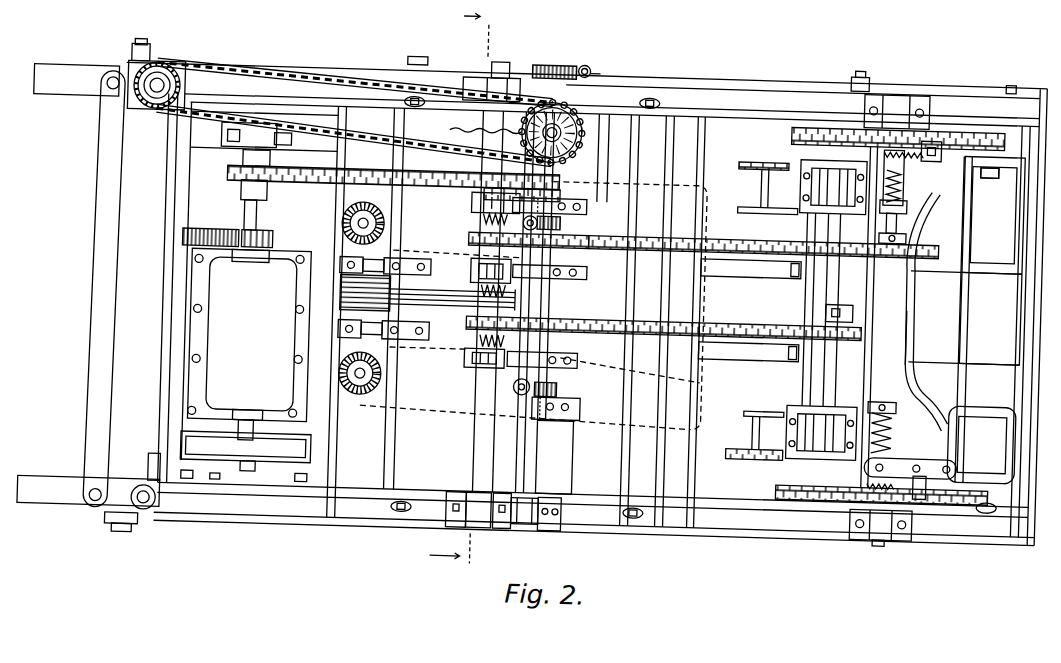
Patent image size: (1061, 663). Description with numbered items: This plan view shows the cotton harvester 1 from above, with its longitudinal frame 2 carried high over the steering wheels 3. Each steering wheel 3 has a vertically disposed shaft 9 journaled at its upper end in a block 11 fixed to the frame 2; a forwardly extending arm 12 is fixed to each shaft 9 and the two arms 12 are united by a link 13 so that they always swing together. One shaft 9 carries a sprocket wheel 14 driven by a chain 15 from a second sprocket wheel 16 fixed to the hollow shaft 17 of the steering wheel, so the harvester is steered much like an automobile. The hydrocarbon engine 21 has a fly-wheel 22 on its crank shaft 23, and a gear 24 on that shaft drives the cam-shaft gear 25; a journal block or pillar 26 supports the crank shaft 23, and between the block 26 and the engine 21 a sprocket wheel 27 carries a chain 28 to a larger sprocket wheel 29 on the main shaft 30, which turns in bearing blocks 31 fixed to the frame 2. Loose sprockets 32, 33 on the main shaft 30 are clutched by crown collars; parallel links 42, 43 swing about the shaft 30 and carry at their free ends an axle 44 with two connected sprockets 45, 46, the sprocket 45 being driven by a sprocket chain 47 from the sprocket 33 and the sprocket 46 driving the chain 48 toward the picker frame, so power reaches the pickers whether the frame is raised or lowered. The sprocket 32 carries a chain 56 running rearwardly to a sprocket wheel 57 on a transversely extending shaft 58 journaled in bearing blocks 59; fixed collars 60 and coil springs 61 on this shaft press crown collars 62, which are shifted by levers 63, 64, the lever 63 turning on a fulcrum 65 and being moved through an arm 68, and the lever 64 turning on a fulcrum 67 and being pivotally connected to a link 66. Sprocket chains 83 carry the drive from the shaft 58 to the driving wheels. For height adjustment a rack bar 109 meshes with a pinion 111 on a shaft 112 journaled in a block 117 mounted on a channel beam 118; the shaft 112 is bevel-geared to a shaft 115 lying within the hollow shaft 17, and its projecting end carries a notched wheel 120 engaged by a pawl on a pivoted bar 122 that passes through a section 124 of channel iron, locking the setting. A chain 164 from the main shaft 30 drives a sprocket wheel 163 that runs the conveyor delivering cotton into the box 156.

The harvester 1 is at (579, 323).
The longitudinal frame 2 is at (322, 518).
The steering wheels 3 is at (45, 504).
The vertically disposed shaft 9 is at (151, 98).
The block 11 is at (156, 471).
The forwardly extending arm 12 is at (124, 87).
The link 13 is at (110, 322).
The sprocket wheel 14 is at (153, 79).
The chain 15 is at (248, 72).
The second sprocket wheel 16 is at (586, 150).
The hollow shaft 17 is at (485, 116).
The hydrocarbon engine 21 is at (251, 334).
The fly-wheel 22 is at (239, 224).
The crank shaft 23 is at (250, 471).
The gear 24 is at (273, 224).
The gear 25 is at (210, 224).
The journal block or pillar 26 is at (225, 149).
The sprocket wheel 27 is at (242, 196).
The chain 28 is at (236, 178).
The sprocket wheel 29 is at (468, 207).
The main shaft 30 is at (482, 440).
The bearing block 31 is at (498, 78).
The sprocket wheel 32 is at (468, 237).
The sprocket wheel 33 is at (583, 313).
The parallel link 42 is at (466, 324).
The parallel link 43 is at (470, 275).
The axle 44 is at (383, 272).
The sprocket 45 is at (345, 310).
The sprocket wheel 46 is at (331, 283).
The sprocket chain 47 is at (464, 360).
The chain 48 is at (393, 268).
The chain 56 is at (759, 311).
The sprocket wheel 57 is at (939, 238).
The transversely extending shaft 58 is at (906, 304).
The bearing blocks 59 is at (886, 85).
The fixed collars 60 is at (906, 202).
The coil springs 61 is at (902, 201).
The crown collars 62 is at (876, 142).
The lever 63 is at (992, 260).
The lever 64 is at (941, 450).
The fulcrum 65 is at (972, 172).
The link 66 is at (963, 306).
The fulcrum 67 is at (965, 457).
The arm 68 is at (908, 186).
The sprocket chains 83 is at (791, 135).
The rack bar 109 is at (542, 212).
The pinion 111 is at (564, 227).
The shaft 112 is at (540, 307).
The shaft 115 is at (585, 134).
The block 117 is at (590, 207).
The channel beam 118 is at (553, 457).
The notched wheel 120 is at (558, 61).
The bar 122 is at (590, 64).
The section of channel iron 124 is at (600, 76).
The box 156 is at (929, 338).
The sprocket wheel 163 is at (838, 308).
The chain 164 is at (759, 322).